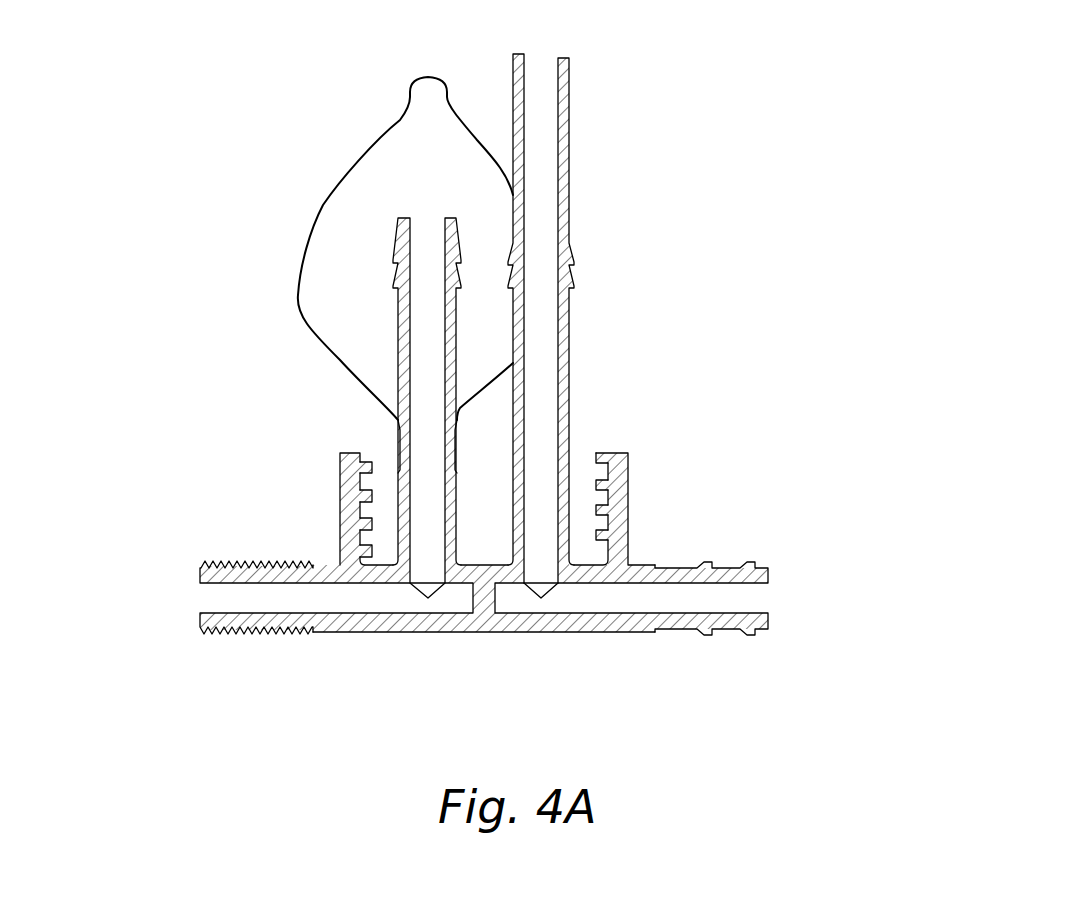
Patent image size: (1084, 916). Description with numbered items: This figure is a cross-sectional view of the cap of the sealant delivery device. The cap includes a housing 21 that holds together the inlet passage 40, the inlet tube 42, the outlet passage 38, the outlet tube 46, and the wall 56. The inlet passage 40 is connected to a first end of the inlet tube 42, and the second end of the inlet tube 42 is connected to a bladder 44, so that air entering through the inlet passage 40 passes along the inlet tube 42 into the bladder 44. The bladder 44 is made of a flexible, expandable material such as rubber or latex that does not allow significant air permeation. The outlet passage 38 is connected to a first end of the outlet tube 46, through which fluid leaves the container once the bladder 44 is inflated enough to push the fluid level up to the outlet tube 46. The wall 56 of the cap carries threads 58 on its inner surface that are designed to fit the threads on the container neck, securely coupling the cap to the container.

The housing 21 is at (568, 337).
The outlet passage 38 is at (747, 595).
The inlet passage 40 is at (222, 595).
The inlet tube 42 is at (430, 380).
The bladder 44 is at (377, 280).
The outlet tube 46 is at (538, 230).
The wall 56 is at (630, 540).
The threads 58 is at (607, 505).